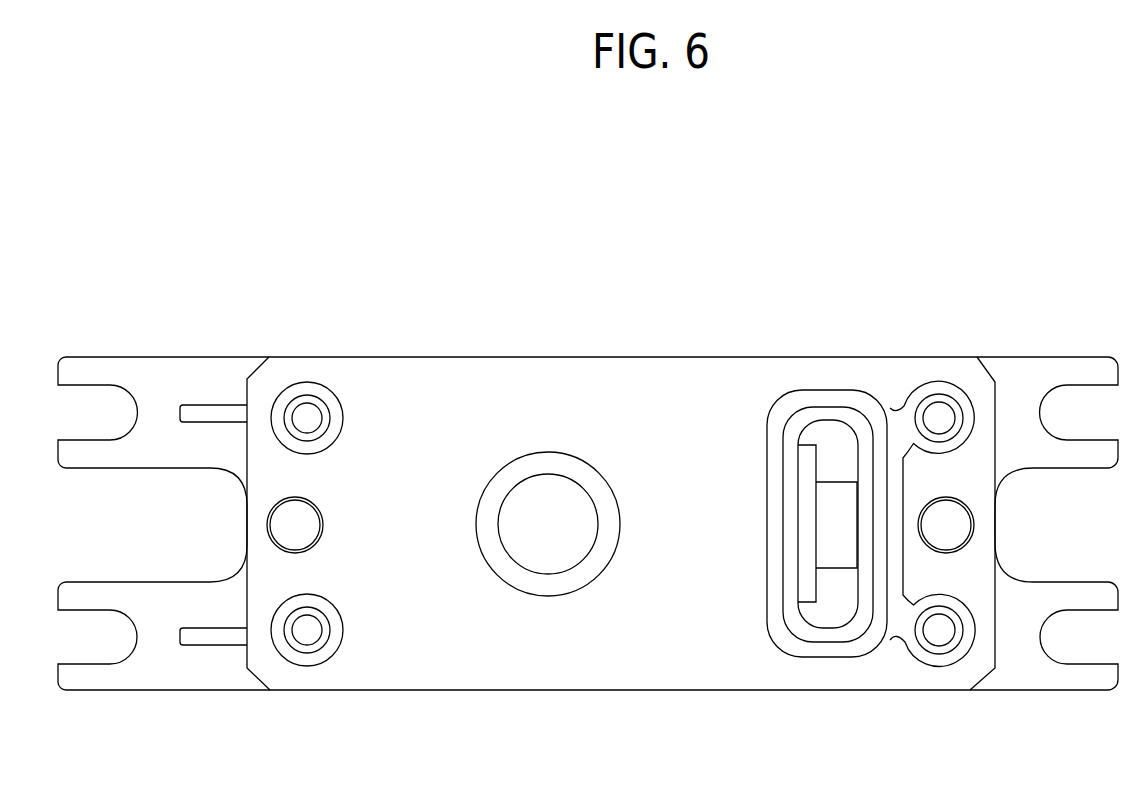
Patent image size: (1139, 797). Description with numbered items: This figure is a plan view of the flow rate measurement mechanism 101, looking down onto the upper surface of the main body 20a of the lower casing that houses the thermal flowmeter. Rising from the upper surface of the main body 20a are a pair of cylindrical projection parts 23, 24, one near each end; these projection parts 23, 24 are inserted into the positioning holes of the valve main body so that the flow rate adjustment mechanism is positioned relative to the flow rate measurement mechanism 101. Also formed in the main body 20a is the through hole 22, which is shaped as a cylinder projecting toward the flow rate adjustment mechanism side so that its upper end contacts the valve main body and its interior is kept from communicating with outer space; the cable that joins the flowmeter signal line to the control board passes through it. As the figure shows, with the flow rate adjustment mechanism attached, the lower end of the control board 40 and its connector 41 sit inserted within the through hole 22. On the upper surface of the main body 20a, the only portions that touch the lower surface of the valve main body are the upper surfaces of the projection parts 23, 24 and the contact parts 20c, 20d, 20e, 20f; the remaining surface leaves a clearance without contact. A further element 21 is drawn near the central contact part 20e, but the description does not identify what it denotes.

The flow rate measurement mechanism 101 is at (707, 212).
The main body 20a is at (625, 357).
The contact part 20c is at (304, 392).
The contact part 20d is at (307, 662).
The contact part 20e is at (552, 597).
The contact part 20f is at (830, 658).
The through hole 21 is at (508, 496).
The through hole 22 is at (810, 468).
The projection part 23 is at (268, 524).
The projection part 24 is at (975, 524).
The control board 40 is at (806, 604).
The connector 41 is at (841, 481).